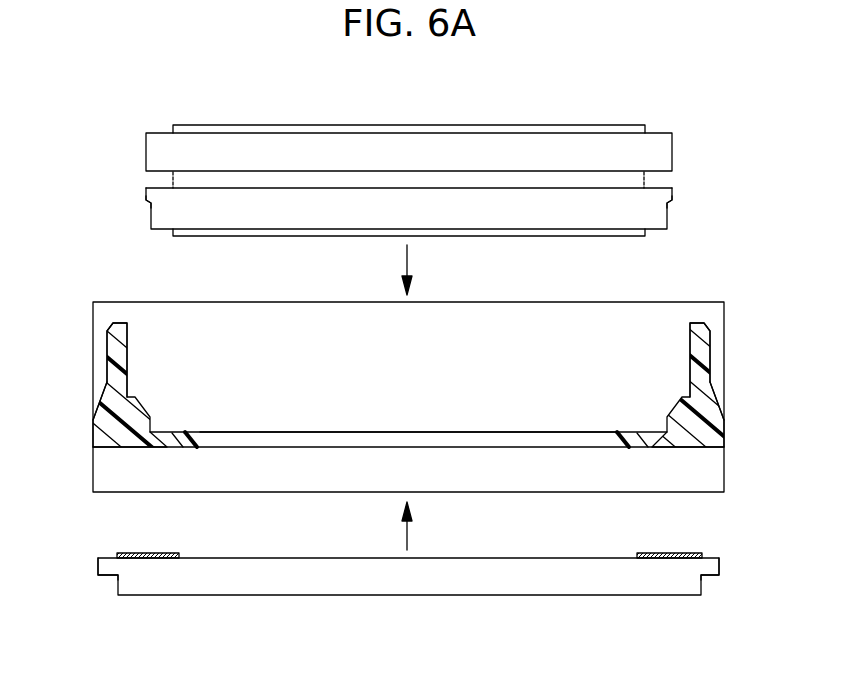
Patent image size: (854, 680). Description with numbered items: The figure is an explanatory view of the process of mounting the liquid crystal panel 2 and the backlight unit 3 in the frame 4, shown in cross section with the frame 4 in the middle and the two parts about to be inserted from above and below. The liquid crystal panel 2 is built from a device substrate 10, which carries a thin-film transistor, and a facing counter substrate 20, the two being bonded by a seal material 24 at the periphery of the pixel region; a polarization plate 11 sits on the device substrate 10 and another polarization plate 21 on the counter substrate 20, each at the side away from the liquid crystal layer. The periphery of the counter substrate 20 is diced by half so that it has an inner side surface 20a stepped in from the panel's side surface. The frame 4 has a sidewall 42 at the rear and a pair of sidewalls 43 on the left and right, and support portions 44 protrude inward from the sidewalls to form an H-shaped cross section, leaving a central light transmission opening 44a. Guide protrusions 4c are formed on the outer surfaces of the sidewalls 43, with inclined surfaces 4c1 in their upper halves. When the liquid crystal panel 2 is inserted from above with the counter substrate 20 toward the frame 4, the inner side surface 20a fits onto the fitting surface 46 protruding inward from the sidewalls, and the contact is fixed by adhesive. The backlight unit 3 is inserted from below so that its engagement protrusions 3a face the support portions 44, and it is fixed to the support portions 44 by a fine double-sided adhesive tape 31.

The liquid crystal panel 2 is at (230, 110).
The device substrate 10 is at (300, 148).
The polarization plate 11 is at (523, 130).
The seal material 24 is at (363, 181).
The counter substrate 20 is at (314, 210).
The inner side surface 20a is at (148, 204).
The polarization plate 21 is at (468, 232).
The frame 4 is at (182, 289).
The sidewall 42 is at (614, 308).
The sidewall 43 is at (112, 345).
The guide protrusion 4c is at (100, 437).
The inclined surface 4c1 is at (102, 392).
The fitting surface 46 is at (152, 418).
The support portion 44 is at (197, 434).
The light transmission opening 44a is at (284, 456).
The backlight unit 3 is at (248, 583).
The engagement protrusion 3a is at (105, 568).
The double-sided adhesive tape 31 is at (130, 553).